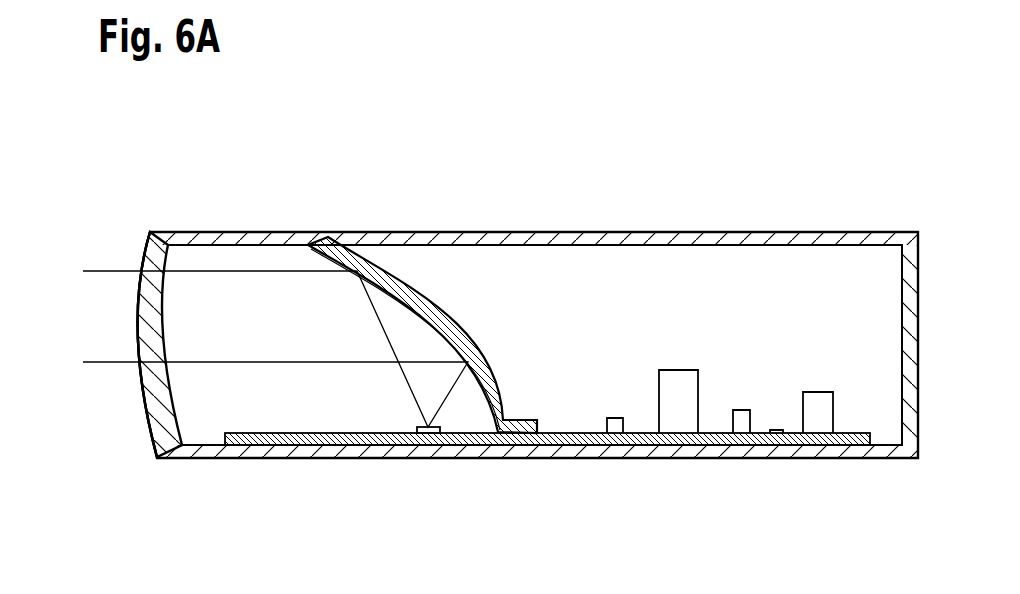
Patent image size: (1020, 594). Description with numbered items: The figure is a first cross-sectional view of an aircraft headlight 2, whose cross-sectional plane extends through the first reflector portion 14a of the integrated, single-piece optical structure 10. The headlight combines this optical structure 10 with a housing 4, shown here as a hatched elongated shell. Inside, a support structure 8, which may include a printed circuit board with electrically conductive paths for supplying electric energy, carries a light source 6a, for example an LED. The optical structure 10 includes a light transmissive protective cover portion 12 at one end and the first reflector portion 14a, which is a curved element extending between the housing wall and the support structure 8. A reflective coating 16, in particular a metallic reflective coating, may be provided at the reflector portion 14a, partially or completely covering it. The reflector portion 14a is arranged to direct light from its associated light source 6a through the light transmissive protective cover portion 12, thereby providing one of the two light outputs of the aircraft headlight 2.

The aircraft headlight 2 is at (790, 110).
The housing 4 is at (817, 223).
The light source 6a is at (410, 418).
The support structure 8 is at (465, 438).
The integrated, single-piece optical structure 10 is at (168, 222).
The light transmissive protective cover portion 12 is at (140, 422).
The first reflector portion 14a is at (460, 311).
The reflective coating 16 is at (401, 301).